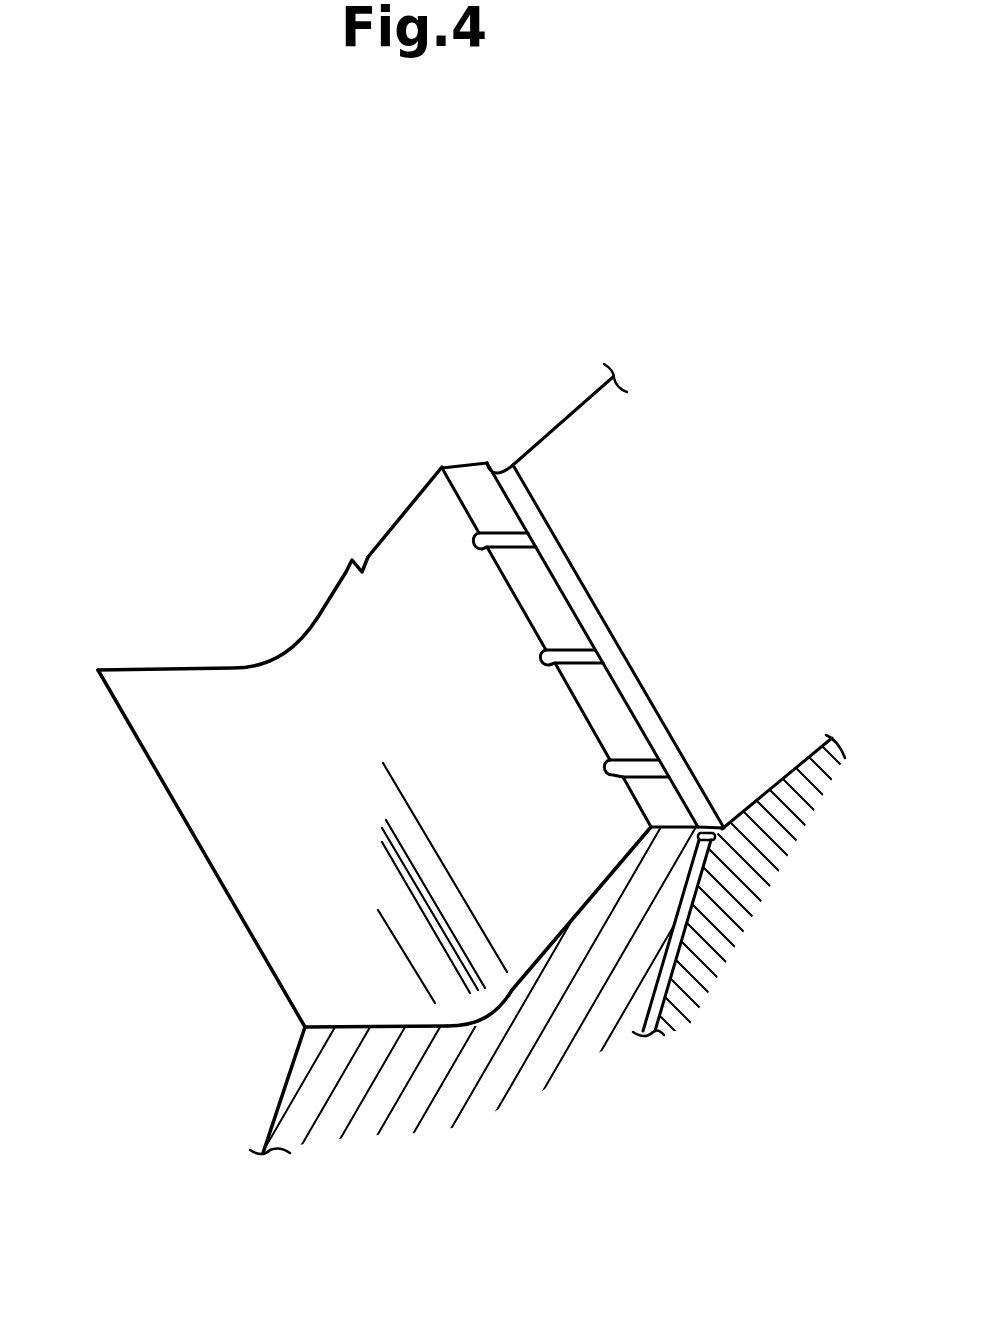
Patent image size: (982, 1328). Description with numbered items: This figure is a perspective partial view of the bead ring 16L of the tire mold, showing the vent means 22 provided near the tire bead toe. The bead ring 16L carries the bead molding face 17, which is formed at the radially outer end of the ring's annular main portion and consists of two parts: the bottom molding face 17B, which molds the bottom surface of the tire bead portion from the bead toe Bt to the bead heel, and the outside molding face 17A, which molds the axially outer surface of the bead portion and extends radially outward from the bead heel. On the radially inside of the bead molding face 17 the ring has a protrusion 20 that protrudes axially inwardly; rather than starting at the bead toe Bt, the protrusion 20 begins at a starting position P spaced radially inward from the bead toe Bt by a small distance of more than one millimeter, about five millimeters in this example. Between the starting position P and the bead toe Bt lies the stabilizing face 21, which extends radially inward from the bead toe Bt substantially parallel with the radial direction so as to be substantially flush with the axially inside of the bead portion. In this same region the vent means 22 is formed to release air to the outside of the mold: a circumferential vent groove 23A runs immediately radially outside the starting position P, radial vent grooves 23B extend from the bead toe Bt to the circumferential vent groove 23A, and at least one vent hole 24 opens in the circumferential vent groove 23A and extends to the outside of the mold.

The bead ring 16L is at (328, 545).
The bead toe Bt is at (442, 468).
The starting position P is at (513, 465).
The bead molding face 17 is at (487, 1190).
The outside molding face 17A is at (328, 1012).
The bottom molding face 17B is at (545, 925).
The stabilizing face 21 is at (475, 445).
The circumferential vent groove 23A is at (610, 660).
The radial vent grooves 23B is at (572, 657).
The protrusion 20 is at (737, 792).
The vent means 22 is at (726, 852).
The vent hole 24 is at (688, 925).